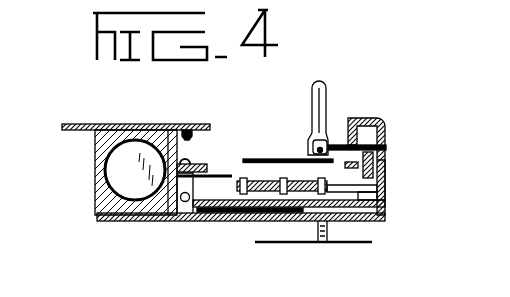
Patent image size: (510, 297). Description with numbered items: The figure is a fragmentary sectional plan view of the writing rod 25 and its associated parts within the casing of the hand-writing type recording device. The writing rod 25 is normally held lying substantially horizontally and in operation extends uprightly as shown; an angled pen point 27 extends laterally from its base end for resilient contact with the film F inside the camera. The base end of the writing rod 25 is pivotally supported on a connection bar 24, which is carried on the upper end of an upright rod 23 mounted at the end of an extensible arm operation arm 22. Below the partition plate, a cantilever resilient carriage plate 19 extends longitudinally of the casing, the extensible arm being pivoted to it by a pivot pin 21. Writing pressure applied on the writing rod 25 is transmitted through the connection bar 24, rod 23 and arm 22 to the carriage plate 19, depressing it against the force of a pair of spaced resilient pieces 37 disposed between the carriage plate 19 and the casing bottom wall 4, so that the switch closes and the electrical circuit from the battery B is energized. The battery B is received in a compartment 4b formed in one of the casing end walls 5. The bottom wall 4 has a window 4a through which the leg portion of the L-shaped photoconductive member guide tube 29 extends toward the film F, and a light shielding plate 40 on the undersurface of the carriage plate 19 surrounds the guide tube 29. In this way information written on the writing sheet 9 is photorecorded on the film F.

The battery B is at (118, 162).
The rear wall 4 is at (162, 220).
The window 4a is at (333, 217).
The compartment 4b is at (108, 183).
The end wall 5 is at (385, 175).
The writing sheet 9 is at (270, 158).
The carriage plate 19 is at (218, 163).
The pivot pin 21 is at (270, 220).
The extensible arm operation arm 22 is at (390, 190).
The upright rod 23 is at (388, 152).
The connection bar 24 is at (367, 150).
The writing rod 25 is at (320, 90).
The angled pen point 27 is at (317, 152).
The photoconductive member guide tube 29 is at (313, 242).
The resilient pieces 37 is at (220, 217).
The light shielding plate 40 is at (303, 233).
The film F is at (345, 243).